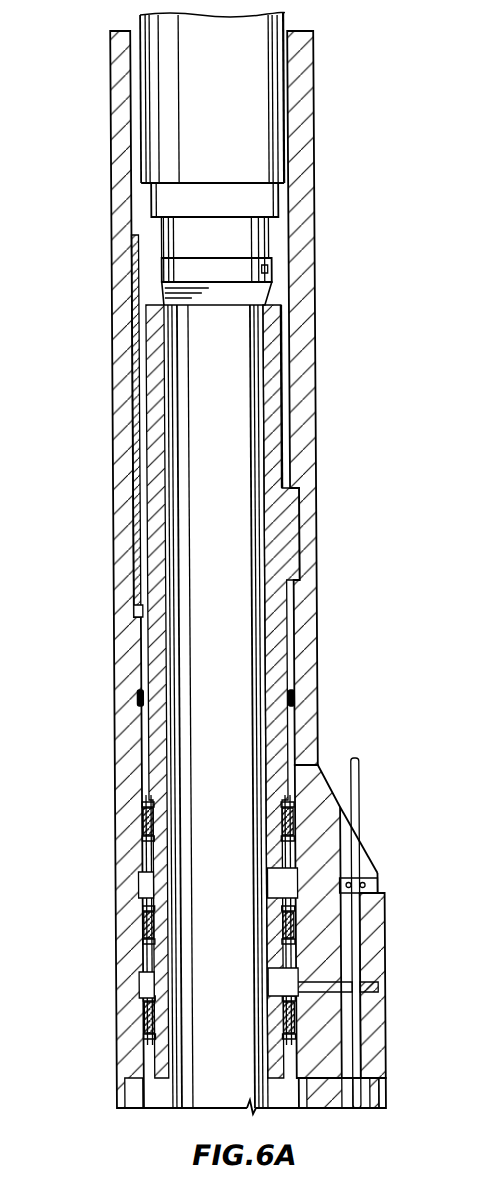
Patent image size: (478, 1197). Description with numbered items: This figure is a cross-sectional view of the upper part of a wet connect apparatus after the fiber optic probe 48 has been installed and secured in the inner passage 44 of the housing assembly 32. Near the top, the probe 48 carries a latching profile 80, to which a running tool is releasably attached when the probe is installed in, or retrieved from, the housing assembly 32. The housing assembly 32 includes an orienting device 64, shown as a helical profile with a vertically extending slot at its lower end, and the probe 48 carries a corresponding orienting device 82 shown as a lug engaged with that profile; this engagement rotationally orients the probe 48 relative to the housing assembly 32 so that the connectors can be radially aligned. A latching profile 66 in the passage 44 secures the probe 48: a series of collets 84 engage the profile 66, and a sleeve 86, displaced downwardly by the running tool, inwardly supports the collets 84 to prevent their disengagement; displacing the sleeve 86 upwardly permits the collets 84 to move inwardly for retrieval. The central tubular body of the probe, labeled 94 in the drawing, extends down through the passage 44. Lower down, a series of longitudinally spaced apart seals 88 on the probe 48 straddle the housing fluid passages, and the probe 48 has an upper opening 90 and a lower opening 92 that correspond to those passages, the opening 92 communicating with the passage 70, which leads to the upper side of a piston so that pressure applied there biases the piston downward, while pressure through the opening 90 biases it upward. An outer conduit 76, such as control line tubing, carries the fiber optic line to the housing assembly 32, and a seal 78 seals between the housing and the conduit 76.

The housing assembly 32 is at (324, 514).
The inner passage 44 is at (468, 398).
The probe 48 is at (134, 847).
The orienting device 64 is at (130, 264).
The latching profile 66 is at (133, 697).
The fluid passage 70 is at (340, 985).
The outer conduit 76 is at (357, 800).
The seal 78 is at (362, 885).
The latching profile 80 is at (266, 277).
The orienting device 82 is at (298, 532).
The collets 84 is at (291, 697).
The sleeve 86 is at (139, 133).
The seals 88 is at (143, 822).
The upper opening 90 is at (262, 874).
The opening 92 is at (262, 973).
The mandrel 94 is at (183, 569).